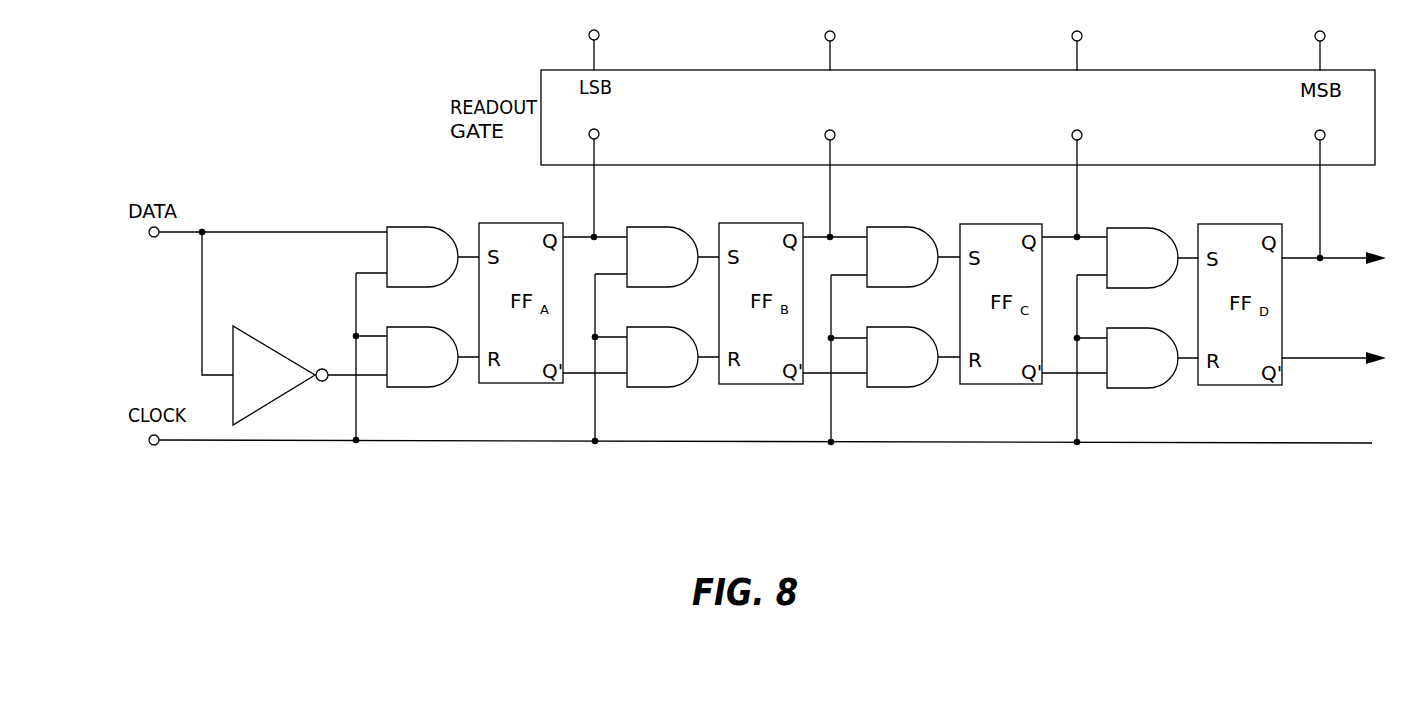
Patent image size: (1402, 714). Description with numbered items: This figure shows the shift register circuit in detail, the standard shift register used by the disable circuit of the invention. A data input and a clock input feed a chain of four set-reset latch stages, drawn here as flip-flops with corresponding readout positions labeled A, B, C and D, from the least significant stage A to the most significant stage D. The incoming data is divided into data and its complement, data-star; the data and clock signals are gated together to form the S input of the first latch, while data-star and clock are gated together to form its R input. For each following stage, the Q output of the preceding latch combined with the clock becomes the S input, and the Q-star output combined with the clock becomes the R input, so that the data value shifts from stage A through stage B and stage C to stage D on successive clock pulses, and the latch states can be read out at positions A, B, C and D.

The readout gate terminal A (LSB) A is at (594, 135).
The readout gate terminal B is at (830, 135).
The readout gate terminal C is at (1078, 135).
The readout gate terminal D (MSB) D is at (1320, 146).